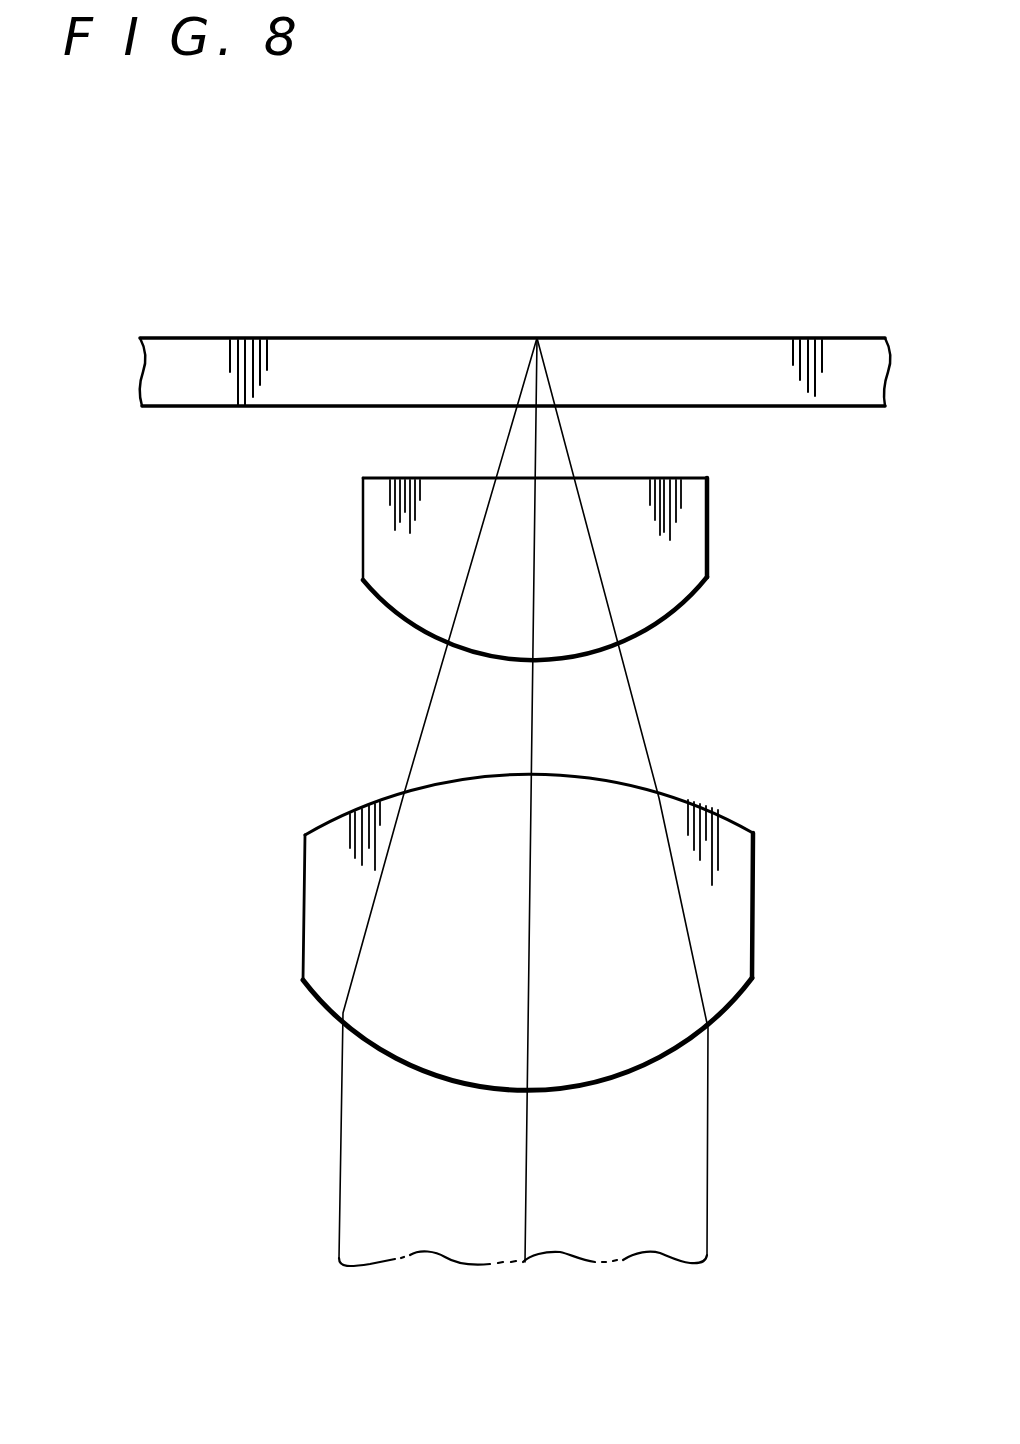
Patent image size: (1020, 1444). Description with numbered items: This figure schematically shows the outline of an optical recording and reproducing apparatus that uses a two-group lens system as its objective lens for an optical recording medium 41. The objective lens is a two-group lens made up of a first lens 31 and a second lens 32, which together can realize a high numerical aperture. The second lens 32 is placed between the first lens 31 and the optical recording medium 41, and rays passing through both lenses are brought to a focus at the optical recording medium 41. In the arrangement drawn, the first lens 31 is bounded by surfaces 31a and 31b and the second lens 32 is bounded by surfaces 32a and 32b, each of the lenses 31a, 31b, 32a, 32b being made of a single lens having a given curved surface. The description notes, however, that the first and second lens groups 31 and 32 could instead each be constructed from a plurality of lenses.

The optical recording medium 41 is at (665, 338).
The second lens 32 is at (590, 548).
The lens surface of second lens 32a is at (683, 607).
The lens surface of second lens 32b is at (650, 478).
The first lens 31 is at (587, 932).
The lens surface of first lens 31a is at (703, 1030).
The lens surface of first lens 31b is at (727, 822).